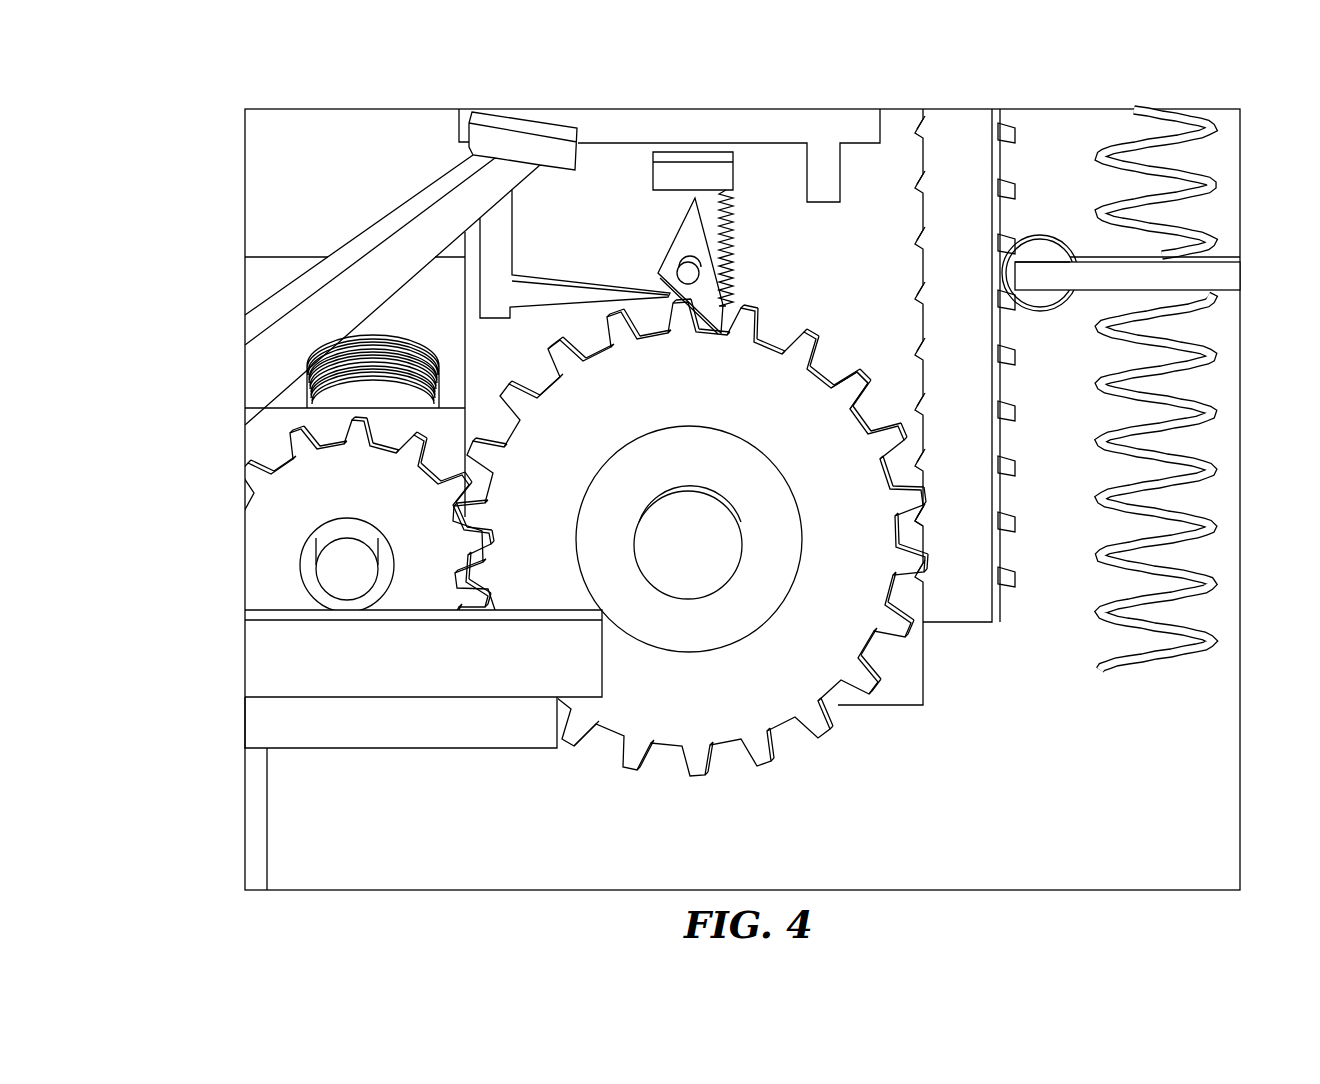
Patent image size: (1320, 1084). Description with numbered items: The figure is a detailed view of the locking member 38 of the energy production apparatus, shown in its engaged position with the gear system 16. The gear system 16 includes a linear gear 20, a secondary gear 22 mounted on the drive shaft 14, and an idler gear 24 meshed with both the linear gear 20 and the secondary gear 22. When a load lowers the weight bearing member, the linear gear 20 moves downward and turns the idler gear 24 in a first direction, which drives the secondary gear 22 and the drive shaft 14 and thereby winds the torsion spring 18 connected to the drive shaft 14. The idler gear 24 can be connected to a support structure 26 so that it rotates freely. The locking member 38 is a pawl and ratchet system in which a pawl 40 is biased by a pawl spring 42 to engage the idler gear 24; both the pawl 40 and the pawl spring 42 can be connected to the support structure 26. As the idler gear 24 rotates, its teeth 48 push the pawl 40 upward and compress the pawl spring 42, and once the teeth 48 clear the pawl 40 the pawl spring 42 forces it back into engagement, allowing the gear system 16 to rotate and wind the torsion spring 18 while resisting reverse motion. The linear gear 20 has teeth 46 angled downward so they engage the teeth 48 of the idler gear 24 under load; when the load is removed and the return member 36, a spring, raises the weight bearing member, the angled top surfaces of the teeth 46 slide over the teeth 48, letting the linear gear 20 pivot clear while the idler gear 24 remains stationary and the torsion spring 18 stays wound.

The drive shaft 14 is at (333, 570).
The gear system 16 is at (886, 769).
The torsion spring 18 is at (347, 355).
The linear gear 20 is at (955, 407).
The secondary gear 22 is at (275, 538).
The idler gear 24 is at (647, 723).
The support structure 26 is at (850, 167).
The return member 36 is at (1213, 583).
The locking member 38 is at (689, 195).
The pawl 40 is at (690, 237).
The pawl spring 42 is at (733, 230).
The teeth 46 is at (920, 512).
The teeth 48 is at (862, 410).